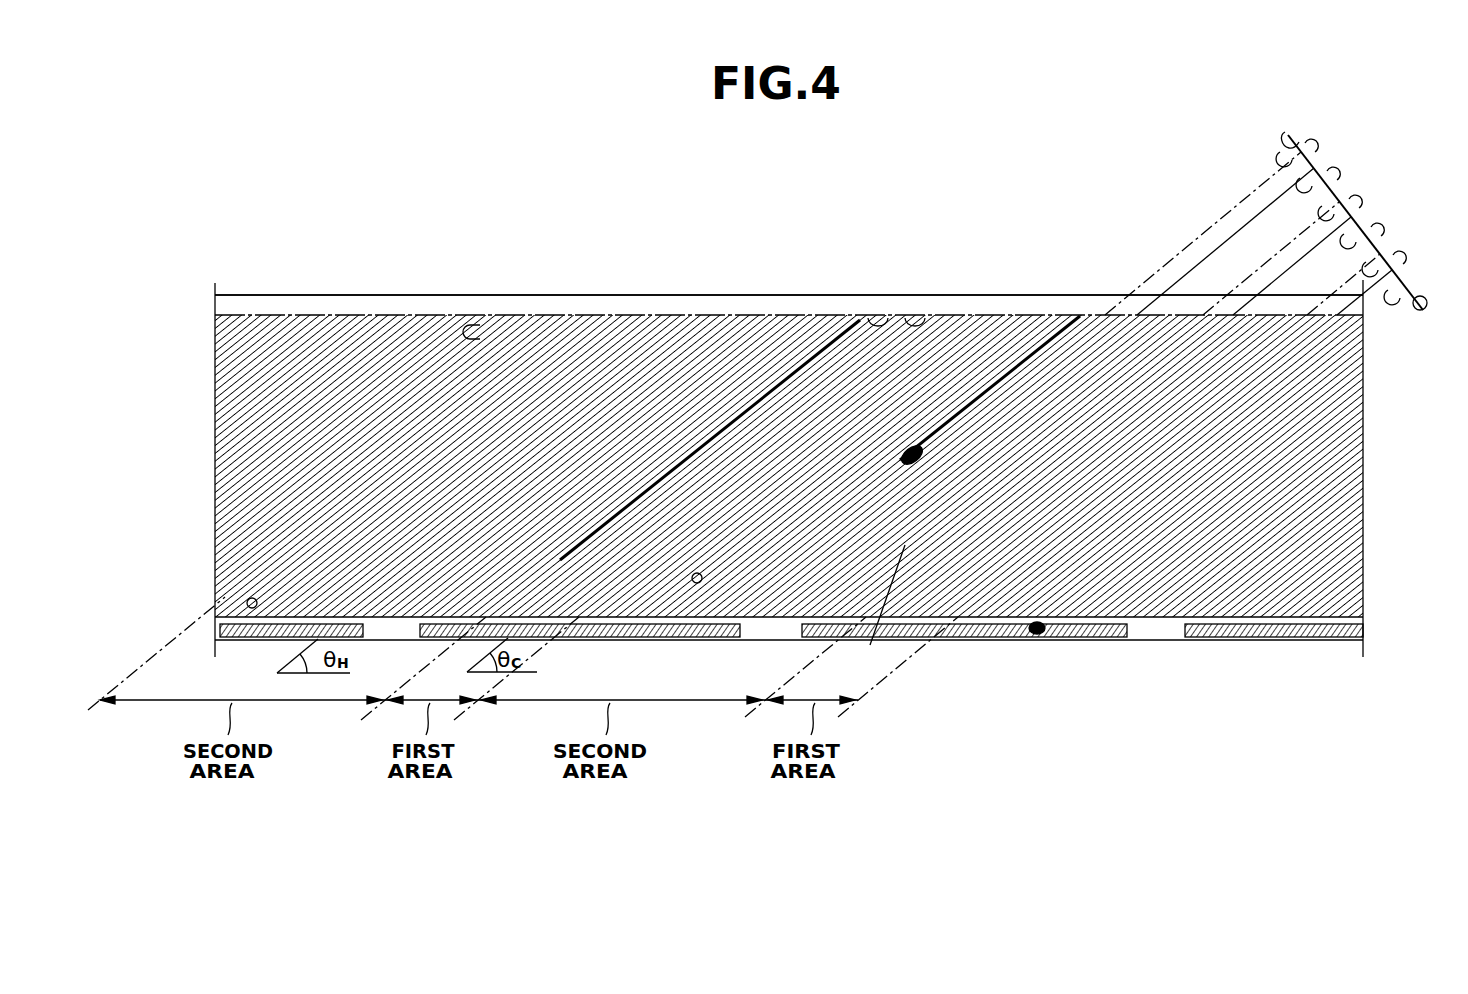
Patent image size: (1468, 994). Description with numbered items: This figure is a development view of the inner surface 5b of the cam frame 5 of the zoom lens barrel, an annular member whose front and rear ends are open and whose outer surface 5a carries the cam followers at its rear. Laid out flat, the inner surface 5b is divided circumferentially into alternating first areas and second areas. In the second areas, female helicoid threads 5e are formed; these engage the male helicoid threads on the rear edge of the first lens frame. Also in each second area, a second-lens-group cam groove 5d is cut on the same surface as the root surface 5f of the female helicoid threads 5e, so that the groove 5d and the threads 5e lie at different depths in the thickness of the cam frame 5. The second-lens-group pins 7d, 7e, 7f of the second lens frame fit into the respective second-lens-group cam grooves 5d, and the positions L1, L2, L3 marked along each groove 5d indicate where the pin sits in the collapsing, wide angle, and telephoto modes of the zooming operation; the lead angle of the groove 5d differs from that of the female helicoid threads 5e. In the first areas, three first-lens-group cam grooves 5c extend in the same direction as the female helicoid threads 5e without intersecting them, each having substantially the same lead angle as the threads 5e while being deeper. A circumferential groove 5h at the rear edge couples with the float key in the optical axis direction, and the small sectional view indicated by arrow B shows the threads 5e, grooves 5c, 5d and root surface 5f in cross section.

The cam frame 5 is at (607, 293).
The outer surface 5a is at (795, 294).
The inner surface 5b is at (921, 318).
The first-lens-group cam groove 5c is at (878, 320).
The second-lens-group cam groove 5d is at (1300, 173).
The female helicoid thread 5e is at (703, 358).
The root surface 5f is at (1390, 283).
The circumferential groove 5h is at (1202, 618).
The second-lens-group pin 7d is at (257, 602).
The second-lens-group pin 7e is at (695, 576).
The second-lens-group pin 7f is at (1027, 620).
The view direction B is at (1383, 322).
The collapsing position L1 is at (228, 603).
The wide angle position L2 is at (348, 560).
The telephoto position L3 is at (573, 470).